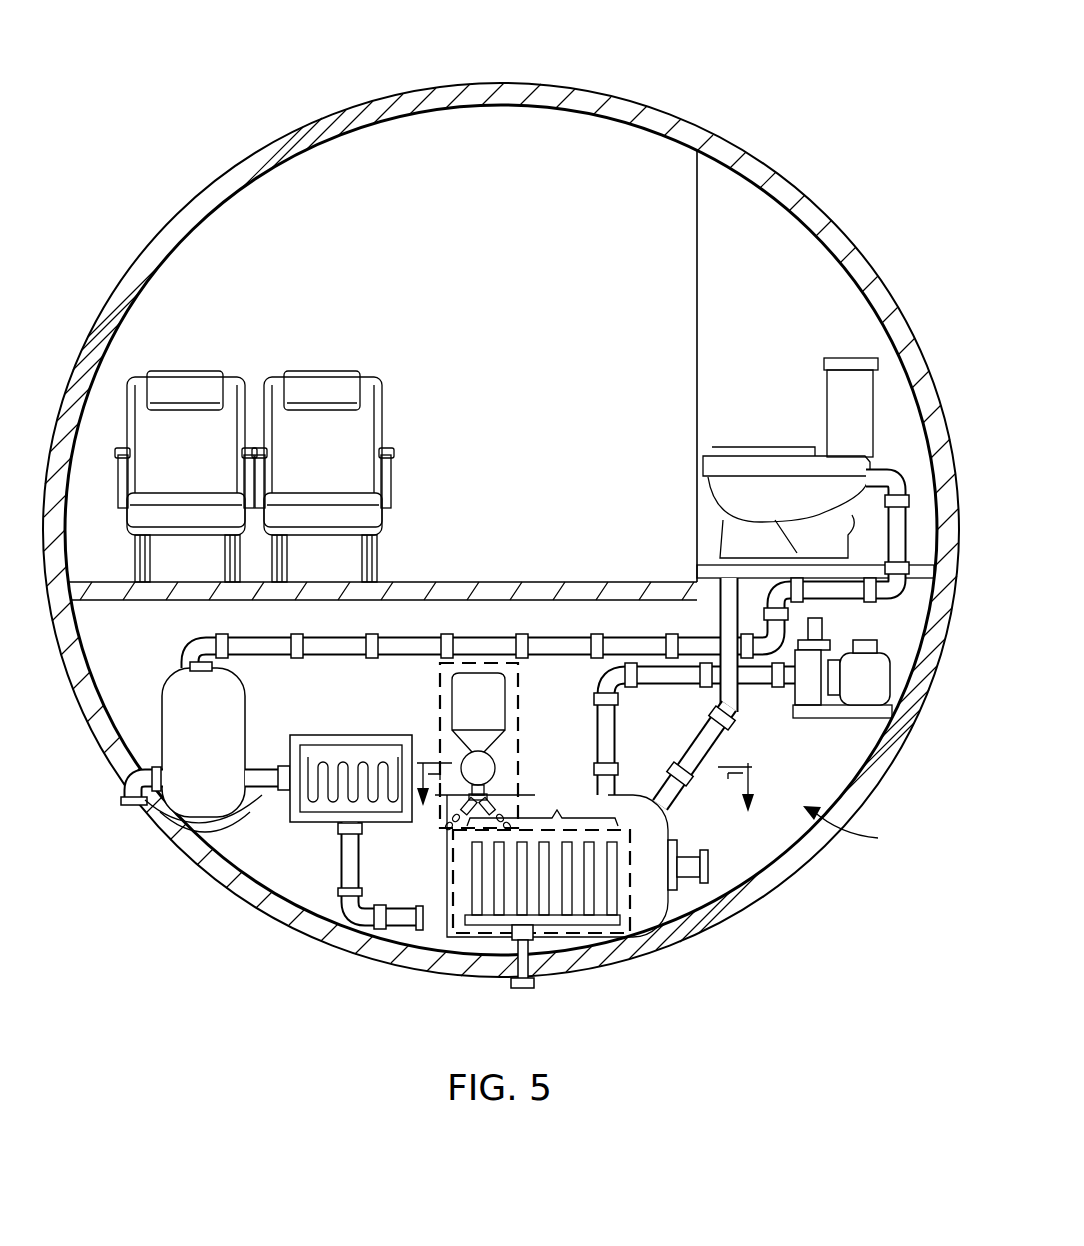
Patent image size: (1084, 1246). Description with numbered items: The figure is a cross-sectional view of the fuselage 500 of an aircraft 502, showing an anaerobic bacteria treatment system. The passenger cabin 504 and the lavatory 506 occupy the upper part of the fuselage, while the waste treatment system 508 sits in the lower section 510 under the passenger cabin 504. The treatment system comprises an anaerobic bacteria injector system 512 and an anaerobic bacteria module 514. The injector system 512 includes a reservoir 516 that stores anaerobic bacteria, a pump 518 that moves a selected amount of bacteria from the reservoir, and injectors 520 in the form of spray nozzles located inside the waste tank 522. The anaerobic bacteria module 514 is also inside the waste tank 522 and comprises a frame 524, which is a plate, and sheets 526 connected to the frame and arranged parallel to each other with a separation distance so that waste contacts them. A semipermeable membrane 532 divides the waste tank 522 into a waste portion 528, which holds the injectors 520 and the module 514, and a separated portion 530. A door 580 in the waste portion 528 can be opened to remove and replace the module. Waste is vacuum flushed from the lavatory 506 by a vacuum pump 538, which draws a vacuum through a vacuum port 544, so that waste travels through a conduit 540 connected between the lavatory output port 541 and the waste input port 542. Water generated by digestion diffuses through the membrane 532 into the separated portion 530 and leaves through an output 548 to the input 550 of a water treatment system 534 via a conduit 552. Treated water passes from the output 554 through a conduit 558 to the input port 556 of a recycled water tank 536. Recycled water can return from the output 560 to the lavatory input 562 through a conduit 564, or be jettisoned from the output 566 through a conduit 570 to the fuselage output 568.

The fuselage 500 is at (720, 137).
The aircraft 502 is at (624, 99).
The passenger cabin 504 is at (325, 413).
The lavatory 506 is at (815, 366).
The waste treatment system 508 is at (862, 830).
The lower section 510 is at (382, 611).
The anaerobic bacteria injector system 512 is at (485, 678).
The anaerobic bacteria module 514 is at (541, 931).
The reservoir 516 is at (510, 697).
The pump 518 is at (492, 772).
The injectors 520 is at (463, 763).
The waste tank 522 is at (677, 843).
The frame 524 is at (520, 943).
The sheets 526 is at (507, 795).
The waste portion 528 is at (655, 822).
The separated portion 530 is at (383, 823).
The semipermeable membrane 532 is at (447, 885).
The water treatment system 534 is at (337, 781).
The recycled water tank 536 is at (176, 731).
The vacuum pump 538 is at (867, 690).
The conduit 540 is at (710, 748).
The lavatory output port 541 is at (727, 567).
The waste input port 542 is at (652, 803).
The vacuum port 544 is at (612, 790).
The output 548 is at (418, 927).
The input 550 is at (330, 927).
The conduit 552 is at (340, 905).
The output 554 is at (262, 770).
The input port 556 is at (187, 835).
The conduit 558 is at (243, 822).
The output 560 is at (190, 676).
The input 562 is at (826, 405).
The conduit 564 is at (620, 638).
The output 566 is at (160, 770).
The output 568 is at (128, 803).
The conduit 570 is at (102, 773).
The door 580 is at (643, 908).